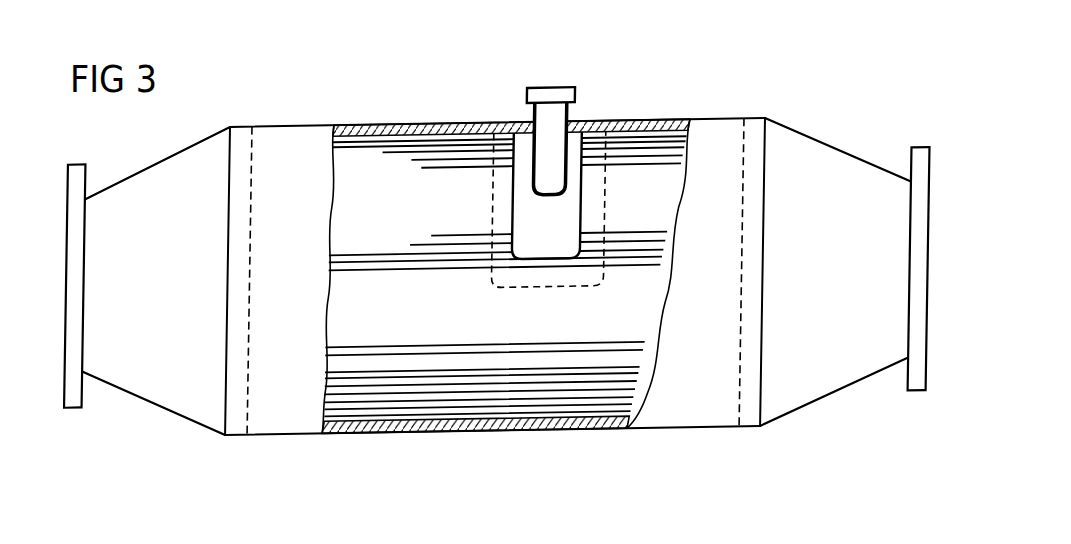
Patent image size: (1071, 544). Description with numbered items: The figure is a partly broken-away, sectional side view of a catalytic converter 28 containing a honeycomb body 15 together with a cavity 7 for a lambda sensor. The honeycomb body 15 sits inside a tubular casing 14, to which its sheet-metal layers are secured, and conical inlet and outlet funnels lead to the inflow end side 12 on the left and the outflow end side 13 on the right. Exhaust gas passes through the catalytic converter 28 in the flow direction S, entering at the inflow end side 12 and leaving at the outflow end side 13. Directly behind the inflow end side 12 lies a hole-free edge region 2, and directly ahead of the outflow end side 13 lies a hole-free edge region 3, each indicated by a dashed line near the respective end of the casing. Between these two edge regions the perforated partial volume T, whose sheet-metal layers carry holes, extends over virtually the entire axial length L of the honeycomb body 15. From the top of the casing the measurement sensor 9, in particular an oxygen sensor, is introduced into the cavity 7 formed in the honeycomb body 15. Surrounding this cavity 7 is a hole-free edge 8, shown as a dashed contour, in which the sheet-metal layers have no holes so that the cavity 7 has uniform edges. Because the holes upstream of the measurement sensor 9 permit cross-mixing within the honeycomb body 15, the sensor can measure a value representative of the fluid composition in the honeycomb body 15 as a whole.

The inflow-side edge region 2 is at (242, 138).
The outflow-side edge region 3 is at (755, 141).
The cavity 7 is at (526, 220).
The hole-free edge 8 is at (598, 211).
The lambda sensor 9 is at (562, 121).
The inflow end side 12 is at (231, 213).
The outflow end side 13 is at (766, 214).
The tubular casing 14 is at (395, 126).
The honeycomb body 15 is at (353, 155).
The catalytic converter 28 is at (139, 432).
The perforated partial volume T is at (314, 250).
The flow direction S is at (173, 331).
The axial length L is at (765, 491).